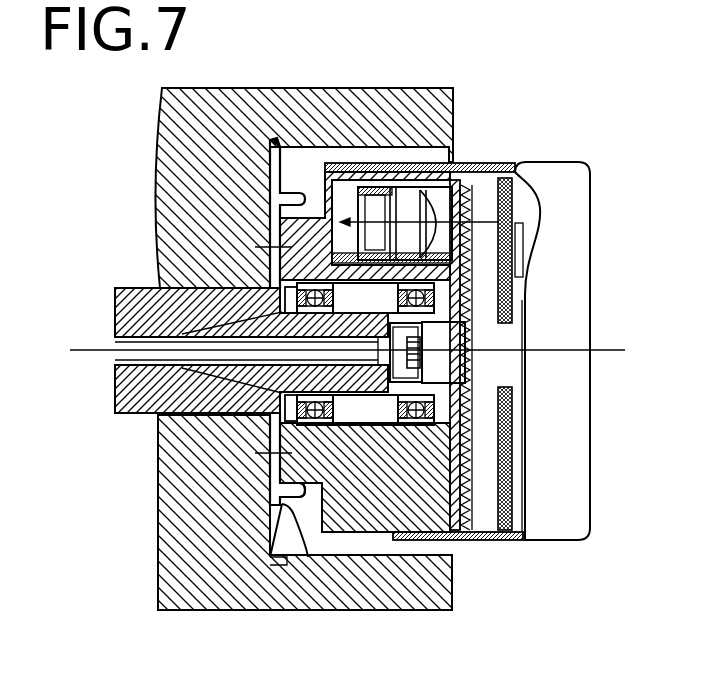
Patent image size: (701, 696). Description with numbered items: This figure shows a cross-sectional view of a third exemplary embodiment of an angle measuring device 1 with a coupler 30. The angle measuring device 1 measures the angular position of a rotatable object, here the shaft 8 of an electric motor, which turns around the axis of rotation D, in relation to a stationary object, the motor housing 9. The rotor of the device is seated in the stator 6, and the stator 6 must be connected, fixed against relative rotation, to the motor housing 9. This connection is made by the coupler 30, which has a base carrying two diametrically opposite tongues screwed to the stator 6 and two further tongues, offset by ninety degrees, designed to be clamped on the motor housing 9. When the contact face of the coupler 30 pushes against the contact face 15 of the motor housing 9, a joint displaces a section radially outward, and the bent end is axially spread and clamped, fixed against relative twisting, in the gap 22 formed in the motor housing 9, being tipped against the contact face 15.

The angle measuring device 1 is at (562, 190).
The stator 6 is at (455, 510).
The shaft 8 is at (142, 390).
The motor housing 9 is at (443, 583).
The contact face 15 is at (302, 548).
The gap 22 is at (268, 142).
The coupler 30 is at (312, 540).
The axis of rotation D is at (96, 349).